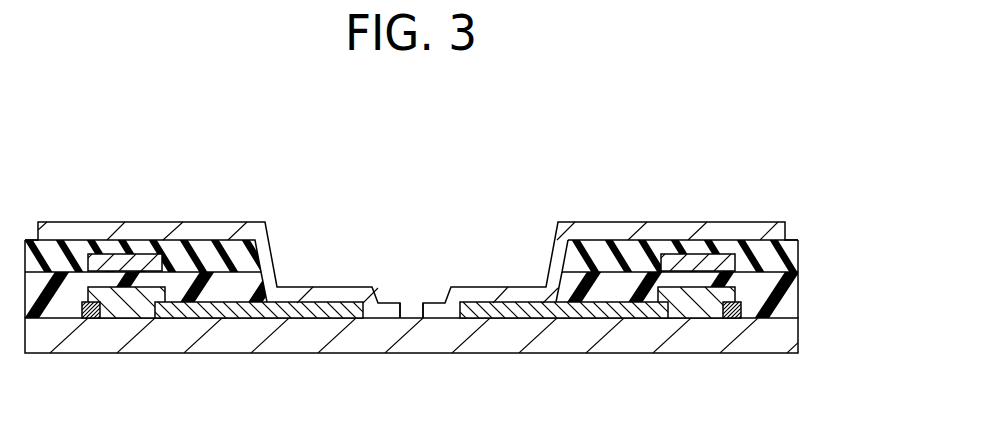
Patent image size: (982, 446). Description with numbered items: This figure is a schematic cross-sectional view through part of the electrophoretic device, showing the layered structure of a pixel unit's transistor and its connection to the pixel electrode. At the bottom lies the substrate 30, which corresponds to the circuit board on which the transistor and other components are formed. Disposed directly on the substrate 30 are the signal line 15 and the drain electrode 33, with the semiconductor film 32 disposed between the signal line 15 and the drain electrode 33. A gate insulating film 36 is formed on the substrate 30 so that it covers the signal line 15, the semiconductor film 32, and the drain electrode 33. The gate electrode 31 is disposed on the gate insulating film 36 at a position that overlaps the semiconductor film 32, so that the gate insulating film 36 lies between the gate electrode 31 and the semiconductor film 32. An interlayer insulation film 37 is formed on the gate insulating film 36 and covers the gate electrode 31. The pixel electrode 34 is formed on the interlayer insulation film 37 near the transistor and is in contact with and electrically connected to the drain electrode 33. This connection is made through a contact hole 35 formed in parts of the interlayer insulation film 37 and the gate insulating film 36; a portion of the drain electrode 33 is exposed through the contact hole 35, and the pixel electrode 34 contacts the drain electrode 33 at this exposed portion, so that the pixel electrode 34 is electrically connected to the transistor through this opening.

The signal line 15 is at (86, 314).
The substrate 30 is at (787, 334).
The gate electrode 31 is at (112, 258).
The semiconductor film 32 is at (129, 305).
The drain electrode 33 is at (226, 305).
The pixel electrode 34 is at (199, 229).
The contact hole 35 is at (406, 241).
The gate insulating film 36 is at (784, 299).
The interlayer insulation film 37 is at (785, 256).